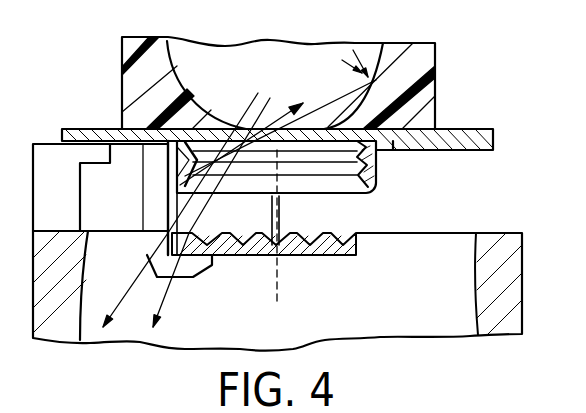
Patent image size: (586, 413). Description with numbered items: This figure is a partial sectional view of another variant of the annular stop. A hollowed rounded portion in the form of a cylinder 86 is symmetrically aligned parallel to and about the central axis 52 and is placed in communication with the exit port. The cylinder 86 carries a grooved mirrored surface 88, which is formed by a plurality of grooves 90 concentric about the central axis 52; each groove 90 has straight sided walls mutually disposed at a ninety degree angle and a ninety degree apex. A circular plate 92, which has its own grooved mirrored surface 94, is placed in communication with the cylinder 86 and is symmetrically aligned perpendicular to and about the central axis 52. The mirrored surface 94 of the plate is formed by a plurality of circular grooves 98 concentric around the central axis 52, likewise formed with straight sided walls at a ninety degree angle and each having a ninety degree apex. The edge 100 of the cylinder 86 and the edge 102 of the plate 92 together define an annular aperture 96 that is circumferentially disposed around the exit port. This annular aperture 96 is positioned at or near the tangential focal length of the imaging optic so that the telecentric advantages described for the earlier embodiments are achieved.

The central axis 52 is at (282, 305).
The cylinder 86 is at (377, 173).
The grooved mirrored surface 88 is at (362, 190).
The grooves 90 is at (406, 129).
The circular plate 92 is at (355, 256).
The grooved mirrored surface 94 is at (348, 237).
The annular aperture 96 is at (190, 204).
The circular grooves 98 is at (240, 235).
The edge of the cylinder 100 is at (170, 193).
The edge of the plate 102 is at (168, 236).